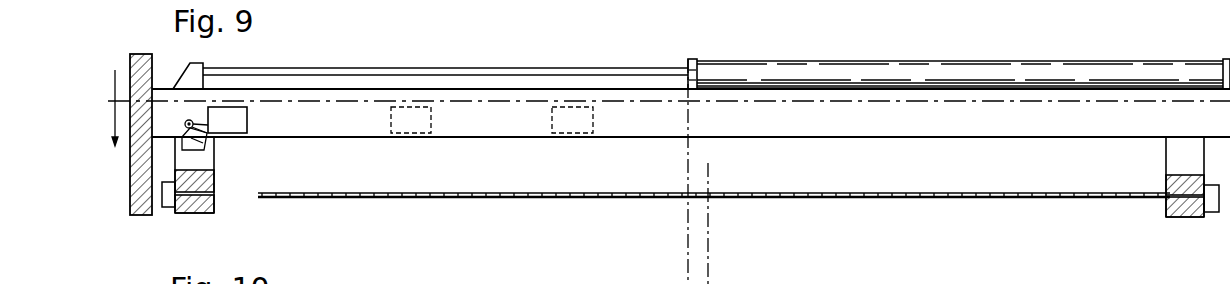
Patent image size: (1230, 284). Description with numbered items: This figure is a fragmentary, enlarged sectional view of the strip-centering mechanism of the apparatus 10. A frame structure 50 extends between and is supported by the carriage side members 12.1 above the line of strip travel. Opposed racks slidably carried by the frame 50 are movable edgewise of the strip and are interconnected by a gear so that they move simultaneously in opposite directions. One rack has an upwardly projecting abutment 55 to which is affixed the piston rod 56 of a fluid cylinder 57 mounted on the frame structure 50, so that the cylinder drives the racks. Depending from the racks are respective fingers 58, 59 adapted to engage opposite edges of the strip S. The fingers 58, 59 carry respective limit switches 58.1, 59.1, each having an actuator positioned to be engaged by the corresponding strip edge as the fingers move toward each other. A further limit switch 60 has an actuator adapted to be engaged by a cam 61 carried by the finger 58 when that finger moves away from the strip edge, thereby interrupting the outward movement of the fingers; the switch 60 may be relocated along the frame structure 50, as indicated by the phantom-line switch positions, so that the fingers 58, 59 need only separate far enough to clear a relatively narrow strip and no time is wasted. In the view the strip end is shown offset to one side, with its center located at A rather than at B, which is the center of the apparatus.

The carriage side members 12.1 is at (147, 54).
The shelter 10 is at (113, 125).
The frame structure 50 is at (507, 86).
The abutment 55 is at (201, 67).
The piston rod 56 is at (350, 74).
The fluid cylinder 57 is at (835, 66).
The limit switch 60 is at (233, 118).
The cam 61 is at (203, 137).
The finger 58 is at (210, 165).
The limit switch 58.1 is at (168, 207).
The finger 59 is at (1181, 165).
The limit switch 59.1 is at (1216, 212).
The strip S is at (780, 192).
The center of the offset strip end A is at (711, 246).
The center of the apparatus B is at (685, 240).